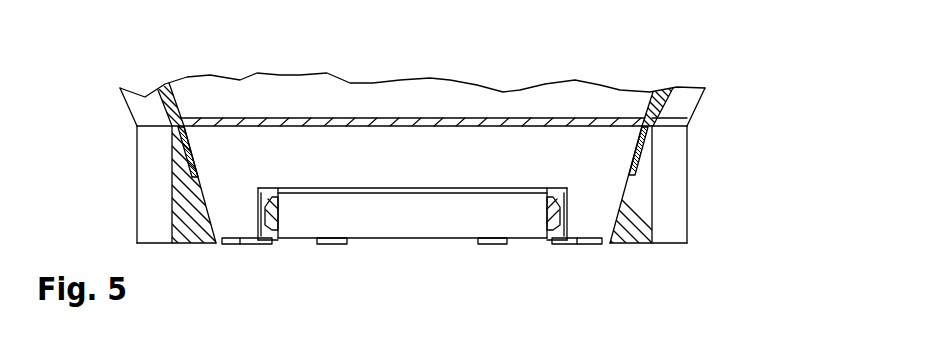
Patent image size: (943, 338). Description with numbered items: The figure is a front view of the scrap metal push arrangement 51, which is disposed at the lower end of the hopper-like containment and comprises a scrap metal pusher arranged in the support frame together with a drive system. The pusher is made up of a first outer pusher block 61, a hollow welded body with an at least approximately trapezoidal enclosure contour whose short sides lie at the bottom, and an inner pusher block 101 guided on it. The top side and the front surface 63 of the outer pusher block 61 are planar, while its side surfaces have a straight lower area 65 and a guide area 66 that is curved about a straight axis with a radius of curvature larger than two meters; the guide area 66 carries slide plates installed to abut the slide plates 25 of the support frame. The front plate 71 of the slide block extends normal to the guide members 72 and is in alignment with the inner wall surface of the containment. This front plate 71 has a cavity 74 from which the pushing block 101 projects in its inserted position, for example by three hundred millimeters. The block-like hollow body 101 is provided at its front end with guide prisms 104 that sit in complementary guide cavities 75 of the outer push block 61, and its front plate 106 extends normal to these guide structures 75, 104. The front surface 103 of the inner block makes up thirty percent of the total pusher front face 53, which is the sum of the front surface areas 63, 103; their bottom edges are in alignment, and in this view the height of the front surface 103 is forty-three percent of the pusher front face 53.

The slide plates 25 is at (183, 131).
The scrap metal push arrangement 51 is at (274, 142).
The pusher front face 53 is at (322, 162).
The outer pusher block 61 is at (378, 152).
The front surface 63 is at (433, 157).
The straight lower area 65 is at (178, 188).
The guide area 66 is at (181, 151).
The front plate 71 is at (222, 165).
The guide members 72 is at (658, 90).
The cavity 74 is at (375, 106).
The guide cavities 75 is at (561, 233).
The inner pusher block 101 is at (468, 213).
The front surface 103 is at (512, 207).
The guide prisms 104 is at (555, 208).
The front plate 106 is at (527, 205).